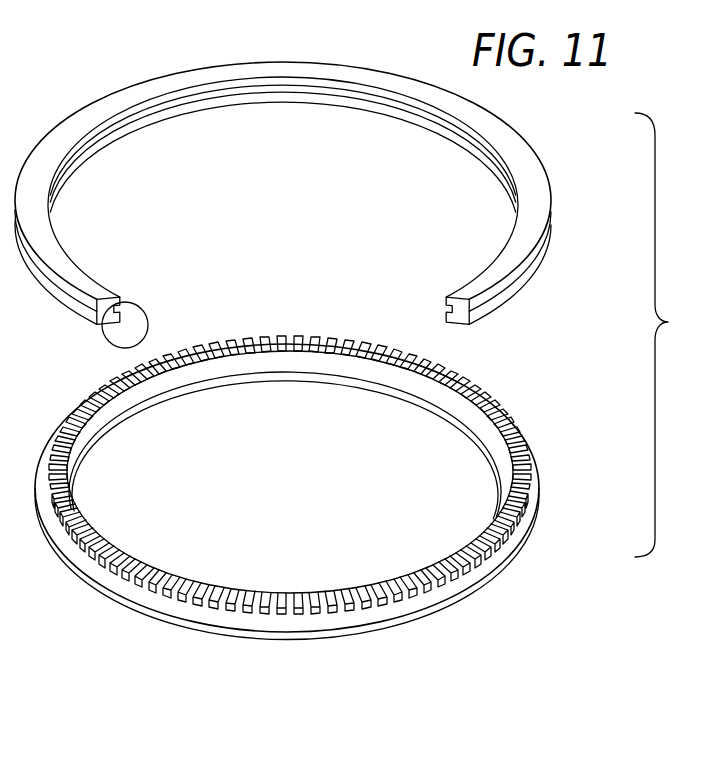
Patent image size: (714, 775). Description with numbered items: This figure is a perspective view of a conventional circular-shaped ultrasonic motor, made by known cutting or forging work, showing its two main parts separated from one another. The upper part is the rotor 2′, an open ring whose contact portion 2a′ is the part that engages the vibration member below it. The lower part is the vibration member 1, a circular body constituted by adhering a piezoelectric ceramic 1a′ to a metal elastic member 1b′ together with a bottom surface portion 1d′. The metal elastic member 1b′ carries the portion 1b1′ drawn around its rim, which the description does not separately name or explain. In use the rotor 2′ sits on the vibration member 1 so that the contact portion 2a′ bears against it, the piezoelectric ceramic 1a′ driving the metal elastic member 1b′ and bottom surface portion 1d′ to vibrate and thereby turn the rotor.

The rotor 2′ is at (540, 198).
The contact portion 2a′ is at (137, 304).
The vibration member 1 is at (327, 532).
The piezoelectric ceramic 1a′ is at (422, 617).
The metal elastic member 1b′ is at (175, 608).
The teeth 1b1′ is at (495, 547).
The bottom surface portion 1d′ is at (285, 637).